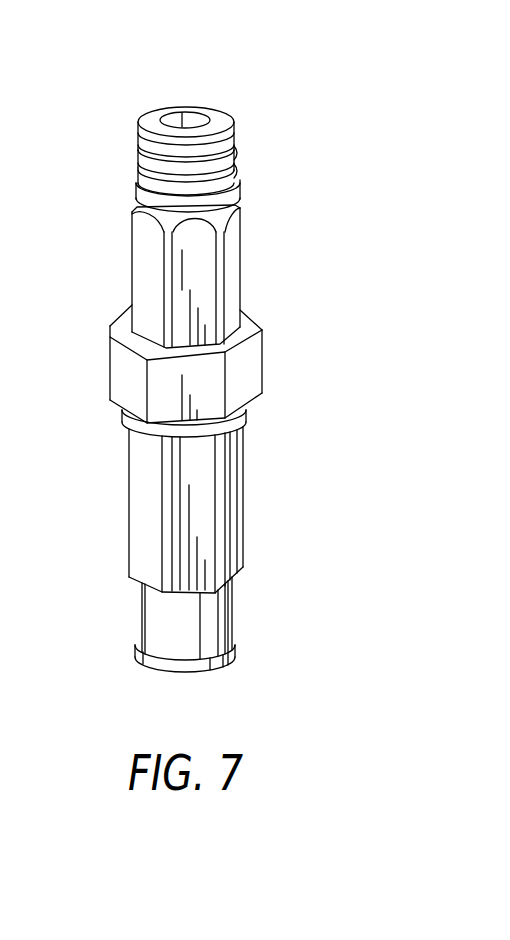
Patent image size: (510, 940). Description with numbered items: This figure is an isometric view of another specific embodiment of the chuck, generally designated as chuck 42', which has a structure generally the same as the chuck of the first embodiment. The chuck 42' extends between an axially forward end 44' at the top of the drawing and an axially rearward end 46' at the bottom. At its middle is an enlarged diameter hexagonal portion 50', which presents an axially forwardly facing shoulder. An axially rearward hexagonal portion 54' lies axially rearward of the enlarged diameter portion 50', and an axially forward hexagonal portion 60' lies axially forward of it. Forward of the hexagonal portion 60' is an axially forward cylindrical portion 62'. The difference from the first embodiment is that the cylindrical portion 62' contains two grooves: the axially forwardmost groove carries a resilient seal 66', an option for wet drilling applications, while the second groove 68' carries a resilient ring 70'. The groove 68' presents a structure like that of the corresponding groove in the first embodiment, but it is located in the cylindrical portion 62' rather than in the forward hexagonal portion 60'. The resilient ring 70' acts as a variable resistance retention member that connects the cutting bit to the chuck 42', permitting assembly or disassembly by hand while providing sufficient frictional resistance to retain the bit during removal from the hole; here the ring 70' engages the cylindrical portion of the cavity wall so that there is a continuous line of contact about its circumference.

The chuck 42' is at (217, 385).
The axially forward end 44' is at (168, 91).
The axially rearward end 46' is at (163, 651).
The enlarged diameter hexagonal portion 50' is at (154, 371).
The axially rearward hexagonal portion 54' is at (224, 510).
The axially forward hexagonal portion 60' is at (222, 276).
The axially forward cylindrical portion 62' is at (149, 129).
The resilient seal 66' is at (221, 145).
The groove 68' is at (152, 177).
The resilient ring 70' is at (223, 187).